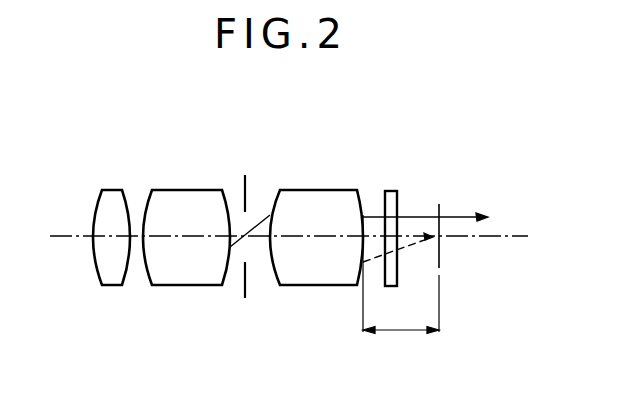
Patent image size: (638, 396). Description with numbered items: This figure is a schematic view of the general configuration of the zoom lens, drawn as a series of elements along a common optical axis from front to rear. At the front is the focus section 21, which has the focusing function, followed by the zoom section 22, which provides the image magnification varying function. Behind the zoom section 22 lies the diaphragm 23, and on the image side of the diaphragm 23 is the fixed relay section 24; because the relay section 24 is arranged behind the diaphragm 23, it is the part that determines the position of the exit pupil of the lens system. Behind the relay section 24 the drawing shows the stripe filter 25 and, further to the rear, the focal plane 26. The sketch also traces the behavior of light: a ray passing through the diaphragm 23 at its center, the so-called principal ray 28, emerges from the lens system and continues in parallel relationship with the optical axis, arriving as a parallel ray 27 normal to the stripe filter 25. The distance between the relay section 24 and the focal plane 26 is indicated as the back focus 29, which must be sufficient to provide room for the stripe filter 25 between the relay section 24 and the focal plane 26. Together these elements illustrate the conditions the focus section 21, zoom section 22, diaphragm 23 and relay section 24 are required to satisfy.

The focus section 21 is at (112, 189).
The zoom section 22 is at (185, 195).
The diaphragm 23 is at (245, 178).
The relay section 24 is at (327, 188).
The stripe filter 25 is at (390, 190).
The focal plane 26 is at (443, 262).
The parallel ray 27 is at (453, 215).
The principal ray 28 is at (270, 215).
The back focus 29 is at (401, 290).